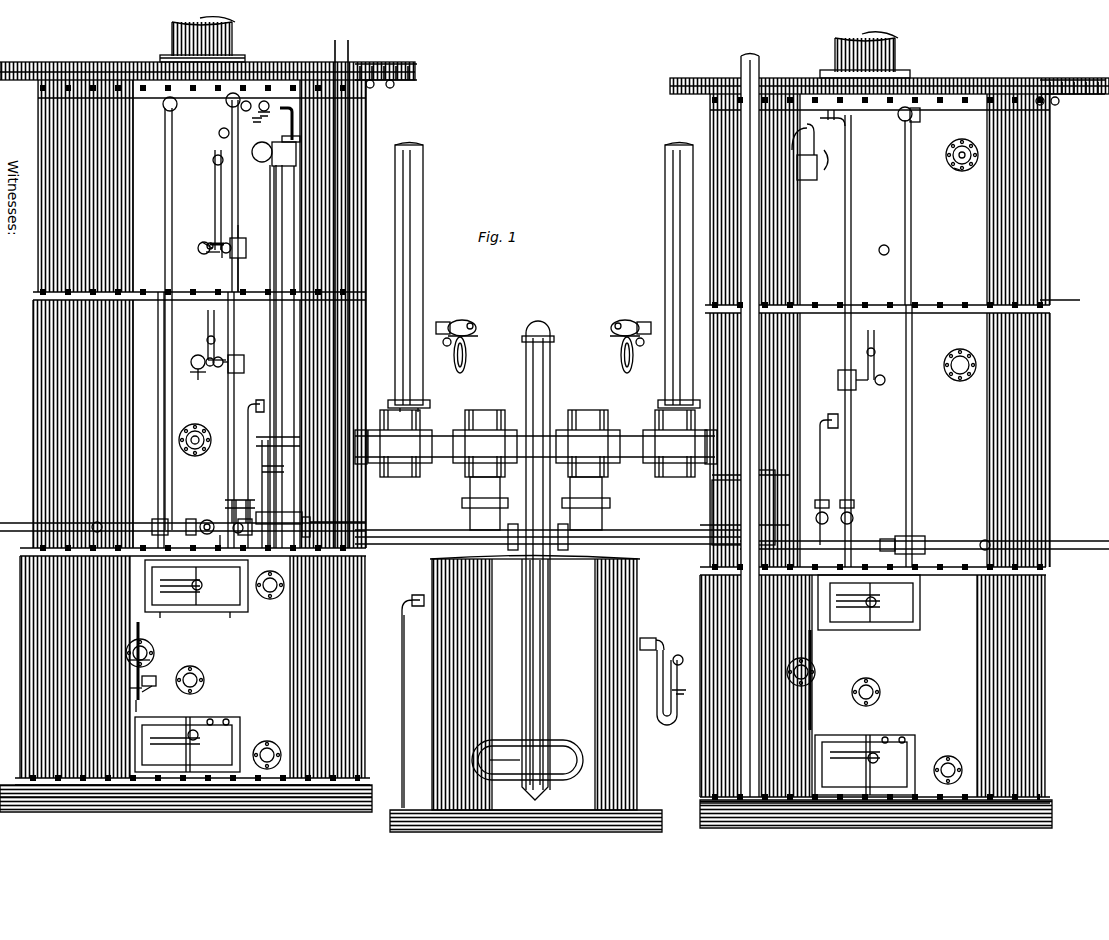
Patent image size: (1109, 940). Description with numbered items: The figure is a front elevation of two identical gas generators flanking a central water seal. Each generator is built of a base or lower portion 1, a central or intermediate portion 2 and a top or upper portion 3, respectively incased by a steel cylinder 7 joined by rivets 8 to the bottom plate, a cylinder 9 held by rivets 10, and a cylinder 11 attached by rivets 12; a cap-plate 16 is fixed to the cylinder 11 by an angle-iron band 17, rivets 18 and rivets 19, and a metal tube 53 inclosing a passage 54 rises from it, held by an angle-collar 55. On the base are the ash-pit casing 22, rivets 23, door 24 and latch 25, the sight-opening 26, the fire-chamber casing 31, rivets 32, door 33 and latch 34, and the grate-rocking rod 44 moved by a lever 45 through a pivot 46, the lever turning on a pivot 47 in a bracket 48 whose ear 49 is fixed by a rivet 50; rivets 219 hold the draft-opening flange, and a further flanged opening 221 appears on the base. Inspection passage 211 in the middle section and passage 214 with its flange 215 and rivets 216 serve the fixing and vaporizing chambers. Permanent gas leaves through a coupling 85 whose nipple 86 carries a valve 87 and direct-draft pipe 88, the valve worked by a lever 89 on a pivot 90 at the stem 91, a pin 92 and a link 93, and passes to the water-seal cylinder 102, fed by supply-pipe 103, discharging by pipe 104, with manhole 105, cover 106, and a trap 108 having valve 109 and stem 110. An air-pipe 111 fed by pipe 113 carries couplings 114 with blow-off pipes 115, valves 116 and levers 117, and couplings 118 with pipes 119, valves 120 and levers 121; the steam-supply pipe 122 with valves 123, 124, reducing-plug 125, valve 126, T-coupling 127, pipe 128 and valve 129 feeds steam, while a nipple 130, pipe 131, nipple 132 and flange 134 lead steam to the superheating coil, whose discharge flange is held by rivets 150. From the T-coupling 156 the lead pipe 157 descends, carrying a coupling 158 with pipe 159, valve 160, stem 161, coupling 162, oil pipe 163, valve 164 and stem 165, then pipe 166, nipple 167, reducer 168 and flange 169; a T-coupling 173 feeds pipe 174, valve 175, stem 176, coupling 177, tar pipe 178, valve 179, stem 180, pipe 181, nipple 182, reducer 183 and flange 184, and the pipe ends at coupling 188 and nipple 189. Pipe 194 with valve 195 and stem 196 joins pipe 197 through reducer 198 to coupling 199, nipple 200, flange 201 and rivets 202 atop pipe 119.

The base or lower portion 1 is at (232, 785).
The central or intermediate portion 2 is at (40, 414).
The top or upper portion 3 is at (38, 262).
The incasing or inclosing cylinder 7 is at (192, 667).
The rivets 8 is at (187, 774).
The cylinder 9 is at (73, 424).
The rivets 10 is at (183, 546).
The cylinder 11 is at (73, 186).
The rivets 12 is at (40, 310).
The cap-plate or cover 16 is at (280, 64).
The angle-iron band 17 is at (376, 86).
The rivets 18 is at (392, 90).
The rivets 19 is at (388, 64).
The casing 22 is at (180, 722).
The rivets 23 is at (226, 720).
The door 24 is at (541, 754).
The locking bar or latch 25 is at (525, 756).
The sight-opening 26 is at (270, 591).
The casing 31 is at (892, 640).
The rivets 32 is at (512, 629).
The door 33 is at (546, 594).
The locking latch or bar 34 is at (531, 594).
The rod 44 is at (156, 656).
The lever 45 is at (142, 628).
The pivot 46 is at (470, 676).
The pivot 47 is at (454, 706).
The bracket 48 is at (470, 715).
The ear 49 is at (493, 705).
The rivet 50 is at (494, 684).
The metal tube 53 is at (232, 34).
The passage 54 is at (215, 17).
The angle-collar 55 is at (248, 58).
The coupling 85 is at (536, 470).
The nipple 86 is at (410, 380).
The valve 87 is at (420, 400).
The pipe 88 is at (420, 272).
The lever 89 is at (466, 362).
The pivot 90 is at (462, 320).
The stem 91 is at (610, 328).
The pin or pivot 92 is at (474, 338).
The link 93 is at (538, 349).
The cylinder of the water seal 102 is at (535, 683).
The supply-pipe 103 is at (402, 660).
The pipe 104 is at (550, 390).
The manhole or handhole 105 is at (494, 740).
The cover 106 is at (505, 759).
The trap 108 is at (663, 632).
The valve 109 is at (682, 687).
The stem 110 is at (688, 704).
The air-pipe 111 is at (380, 536).
The pipe 113 is at (574, 614).
The couplings 114 is at (360, 530).
The relief or blow-off pipe 115 is at (350, 370).
The valve 116 is at (300, 510).
The lever 117 is at (300, 500).
The couplings 118 is at (279, 517).
The pipe 119 is at (283, 286).
The valve 120 is at (270, 470).
The lever 121 is at (300, 437).
The steam-supply pipe 122 is at (196, 496).
The valve 123 is at (102, 522).
The valve 124 is at (530, 517).
The reducing-plug 125 is at (244, 534).
The valve 126 is at (221, 548).
The T-coupling 127 is at (820, 548).
The pipe 128 is at (252, 402).
The valve 129 is at (832, 512).
The nipple 130 is at (912, 536).
The pipe 131 is at (924, 437).
The short pipe or nipple 132 is at (166, 118).
The flange 134 is at (916, 116).
The rivets 150 is at (150, 517).
The T-coupling 156 is at (851, 126).
The pipe 157 is at (239, 182).
The T-shaped coupling 158 is at (246, 246).
The pipe 159 is at (240, 226).
The valve 160 is at (848, 250).
The stem 161 is at (224, 256).
The coupling 162 is at (214, 252).
The oil or liquid-hydrocarbon supply pipe 163 is at (215, 190).
The valve 164 is at (213, 162).
The stem 165 is at (189, 240).
The pipe 166 is at (206, 252).
The nipple or short pipe 167 is at (198, 240).
The reducer 168 is at (890, 252).
The flange 169 is at (203, 236).
The T-coupling 173 is at (838, 378).
The pipe 174 is at (226, 350).
The valve 175 is at (216, 368).
The valve-stem 176 is at (224, 370).
The coupling 177 is at (200, 370).
The supply-pipe 178 is at (546, 343).
The valve 179 is at (207, 340).
The valve-stem 180 is at (189, 379).
The pipe 181 is at (192, 366).
The nipple 182 is at (187, 359).
The reducer 183 is at (196, 356).
The flange 184 is at (205, 354).
The coupling 188 is at (232, 490).
The nipple 189 is at (230, 500).
The pipe 194 is at (539, 98).
The valve 195 is at (564, 100).
The stem 196 is at (545, 131).
The pipe 197 is at (292, 112).
The reducer 198 is at (294, 136).
The coupling 199 is at (290, 154).
The nipple or short pipe 200 is at (262, 162).
The flange 201 is at (212, 133).
The rivets 202 is at (256, 132).
The passage 211 is at (262, 298).
The passage 214 is at (978, 166).
The flange 215 is at (958, 172).
The rivets 216 is at (948, 160).
The rivets 219 is at (202, 674).
The flanged opening 221 is at (607, 751).